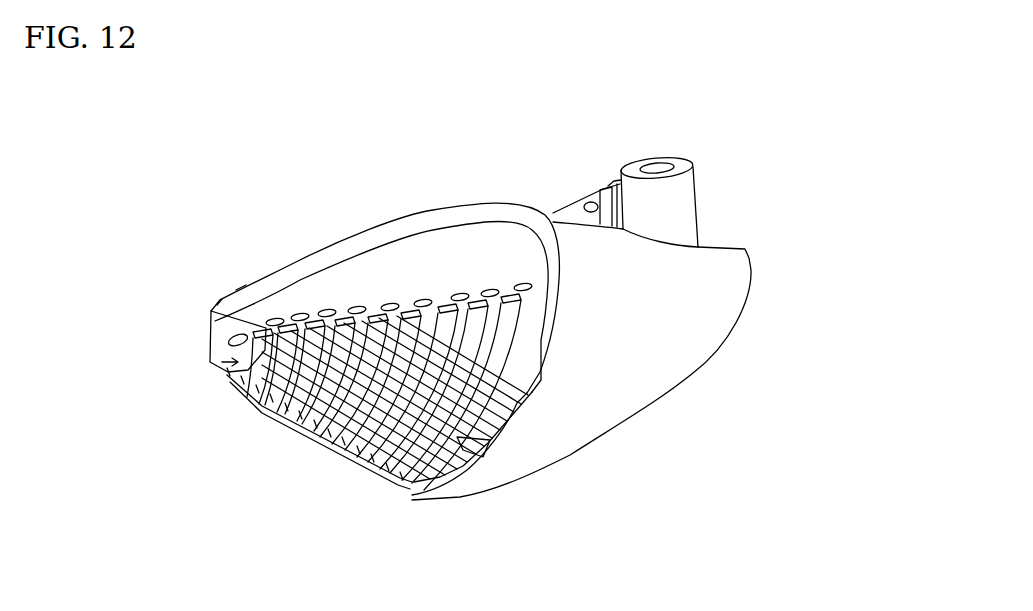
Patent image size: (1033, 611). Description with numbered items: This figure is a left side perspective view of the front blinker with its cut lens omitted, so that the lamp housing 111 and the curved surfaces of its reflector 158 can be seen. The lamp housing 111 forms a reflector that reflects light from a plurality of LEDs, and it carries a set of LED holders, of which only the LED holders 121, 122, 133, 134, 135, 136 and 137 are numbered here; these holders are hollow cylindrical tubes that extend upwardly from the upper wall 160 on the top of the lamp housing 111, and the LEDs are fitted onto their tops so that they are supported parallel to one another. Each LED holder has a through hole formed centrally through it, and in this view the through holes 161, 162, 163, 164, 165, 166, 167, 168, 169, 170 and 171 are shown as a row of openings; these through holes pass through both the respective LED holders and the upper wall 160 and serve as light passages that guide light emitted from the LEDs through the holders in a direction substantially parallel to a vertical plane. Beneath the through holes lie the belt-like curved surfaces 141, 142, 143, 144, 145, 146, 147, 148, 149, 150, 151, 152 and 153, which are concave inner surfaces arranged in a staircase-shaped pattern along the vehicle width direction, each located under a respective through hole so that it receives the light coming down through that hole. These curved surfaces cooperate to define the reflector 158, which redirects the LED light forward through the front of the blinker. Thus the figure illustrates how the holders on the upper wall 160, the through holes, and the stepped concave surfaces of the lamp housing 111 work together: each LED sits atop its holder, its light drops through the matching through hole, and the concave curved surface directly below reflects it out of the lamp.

The lamp housing 111 is at (760, 267).
The LED holder 121 is at (217, 303).
The LED holder 122 is at (240, 288).
The LED holder 133 is at (562, 210).
The LED holder 134 is at (580, 200).
The LED holder 135 is at (612, 183).
The LED holder 136 is at (620, 180).
The LED holder 137 is at (680, 160).
The curved surface 141 is at (227, 372).
The curved surface 142 is at (227, 386).
The curved surface 143 is at (253, 396).
The curved surface 144 is at (270, 408).
The curved surface 145 is at (282, 418).
The curved surface 146 is at (282, 440).
The curved surface 147 is at (300, 434).
The curved surface 148 is at (320, 445).
The curved surface 149 is at (334, 445).
The curved surface 150 is at (350, 462).
The curved surface 151 is at (368, 474).
The curved surface 152 is at (381, 484).
The curved surface 153 is at (401, 484).
The reflector 158 is at (215, 362).
The upper wall 160 is at (417, 220).
The through hole 161 is at (212, 338).
The through hole 162 is at (214, 326).
The through hole 163 is at (273, 318).
The through hole 164 is at (299, 313).
The through hole 165 is at (326, 309).
The through hole 166 is at (357, 306).
The through hole 167 is at (390, 303).
The through hole 168 is at (423, 299).
The through hole 169 is at (460, 293).
The through hole 170 is at (490, 289).
The through hole 171 is at (523, 283).